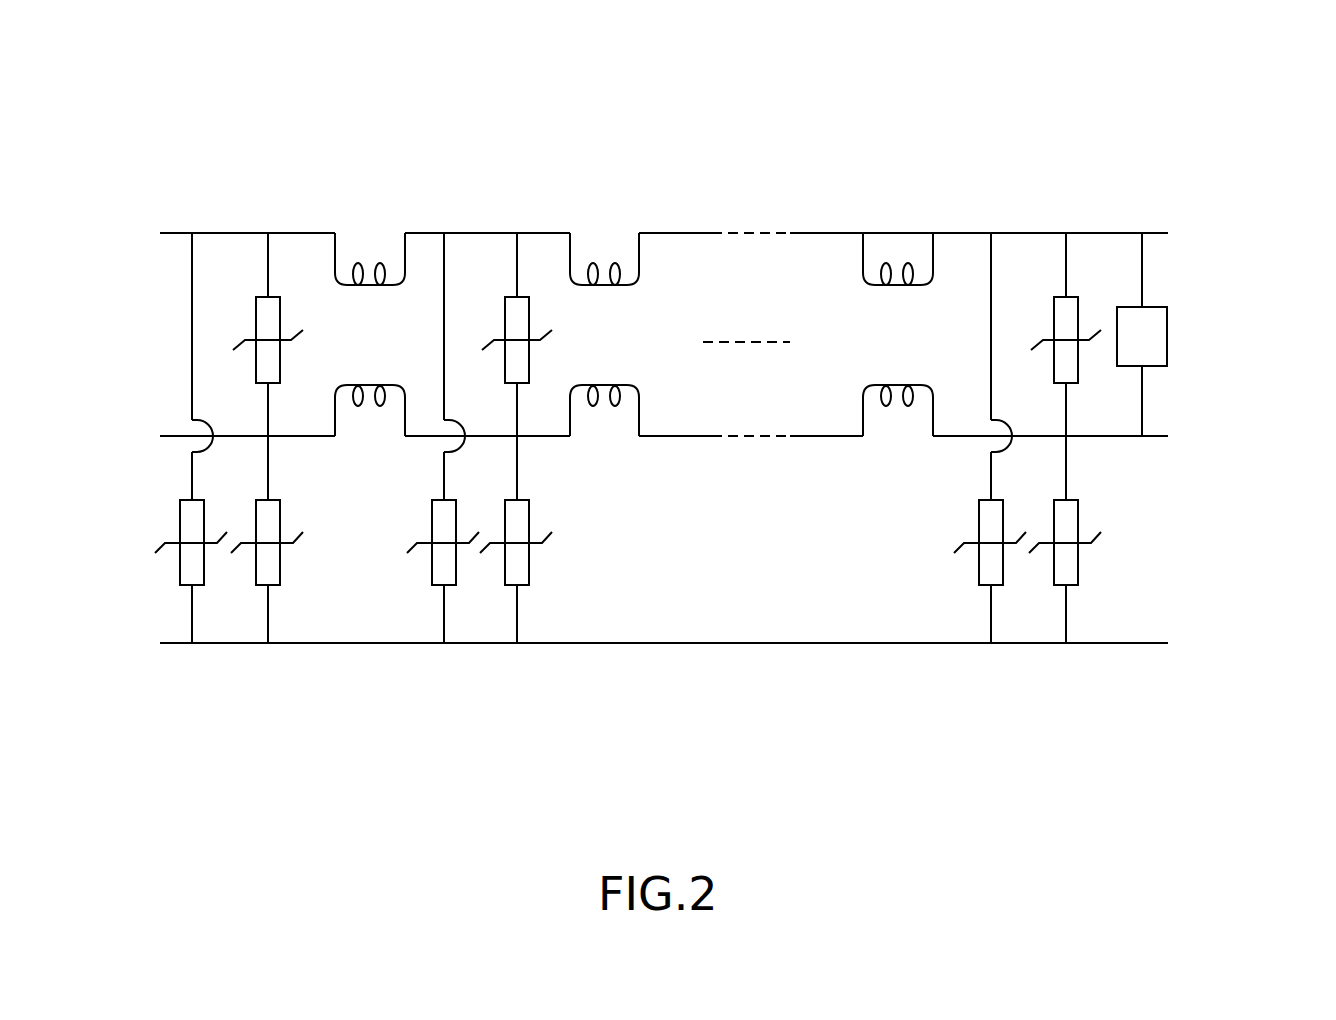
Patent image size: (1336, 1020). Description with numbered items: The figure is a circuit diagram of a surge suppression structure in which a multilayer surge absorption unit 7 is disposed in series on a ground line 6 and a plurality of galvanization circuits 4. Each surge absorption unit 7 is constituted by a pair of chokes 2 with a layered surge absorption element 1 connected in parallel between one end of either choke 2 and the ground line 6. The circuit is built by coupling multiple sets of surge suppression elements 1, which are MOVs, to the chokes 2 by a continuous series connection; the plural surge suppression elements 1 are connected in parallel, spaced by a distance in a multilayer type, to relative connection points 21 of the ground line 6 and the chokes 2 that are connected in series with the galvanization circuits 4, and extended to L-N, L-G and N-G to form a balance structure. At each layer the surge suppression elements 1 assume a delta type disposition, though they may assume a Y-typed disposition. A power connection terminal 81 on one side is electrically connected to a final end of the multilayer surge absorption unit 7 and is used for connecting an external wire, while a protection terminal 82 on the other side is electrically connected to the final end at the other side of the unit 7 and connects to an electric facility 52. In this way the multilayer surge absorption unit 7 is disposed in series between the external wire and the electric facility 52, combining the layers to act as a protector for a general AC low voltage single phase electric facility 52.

The multilayer surge absorption unit 7 is at (390, 208).
The power connection terminal 81 is at (175, 330).
The connection point 21 is at (518, 233).
The choke 2 is at (898, 242).
The galvanization circuit 4 is at (1037, 233).
The protection terminal 82 is at (1158, 278).
The electric facility 52 is at (1145, 335).
The surge absorption element 1 is at (1063, 522).
The ground line 6 is at (917, 643).